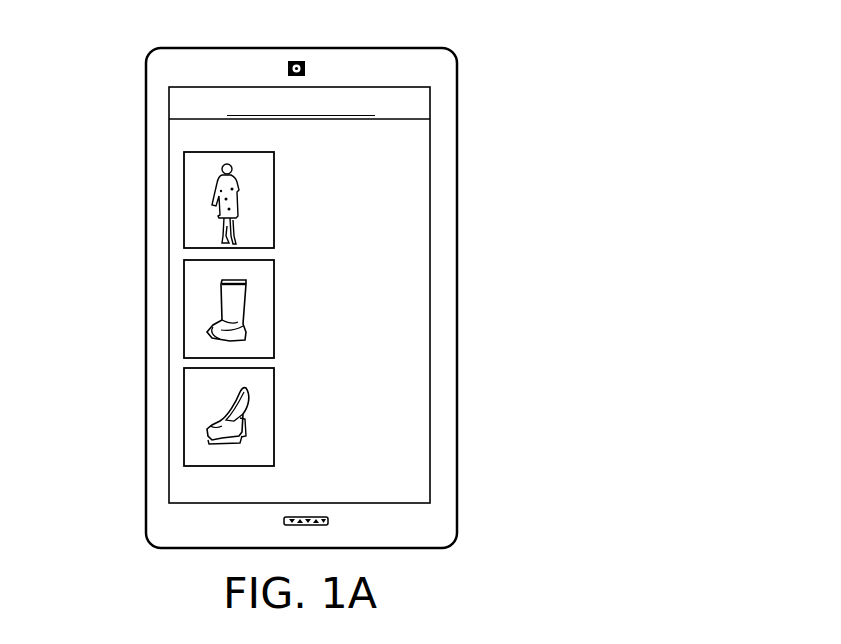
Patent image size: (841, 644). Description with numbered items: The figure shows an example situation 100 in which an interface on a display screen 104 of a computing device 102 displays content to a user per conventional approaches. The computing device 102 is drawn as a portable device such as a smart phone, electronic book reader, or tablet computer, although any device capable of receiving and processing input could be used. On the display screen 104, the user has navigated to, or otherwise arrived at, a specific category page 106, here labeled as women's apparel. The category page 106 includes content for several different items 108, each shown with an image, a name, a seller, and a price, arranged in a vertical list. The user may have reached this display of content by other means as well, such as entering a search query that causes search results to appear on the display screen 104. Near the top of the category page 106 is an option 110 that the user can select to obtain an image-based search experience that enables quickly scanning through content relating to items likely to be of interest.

The example situation 100 is at (674, 93).
The computing device 102 is at (146, 57).
The display screen 104 is at (169, 170).
The category page 106 is at (397, 134).
The items 108 is at (392, 240).
The option 110 is at (410, 104).